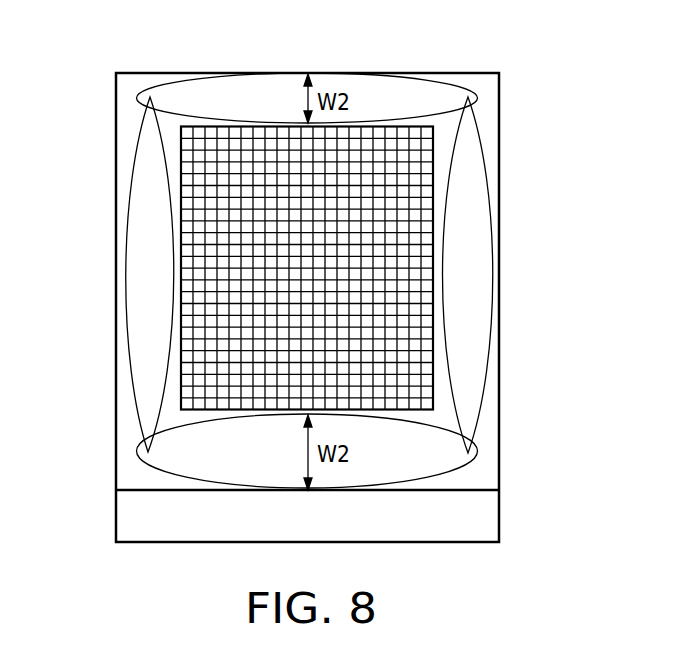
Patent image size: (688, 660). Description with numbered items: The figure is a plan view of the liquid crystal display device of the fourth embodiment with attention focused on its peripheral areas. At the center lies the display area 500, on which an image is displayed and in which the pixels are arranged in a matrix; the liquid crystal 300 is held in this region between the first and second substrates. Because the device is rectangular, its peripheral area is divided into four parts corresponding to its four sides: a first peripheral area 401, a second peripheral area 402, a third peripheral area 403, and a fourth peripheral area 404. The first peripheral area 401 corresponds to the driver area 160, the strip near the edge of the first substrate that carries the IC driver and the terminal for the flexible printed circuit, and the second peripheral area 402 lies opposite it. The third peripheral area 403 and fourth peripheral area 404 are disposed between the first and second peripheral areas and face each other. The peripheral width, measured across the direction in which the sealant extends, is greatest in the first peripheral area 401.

The driver area 160 is at (490, 520).
The liquid crystal 300 is at (225, 153).
The display area 500 is at (297, 218).
The first peripheral area 401 is at (193, 477).
The second peripheral area 402 is at (428, 73).
The third peripheral area 403 is at (128, 172).
The fourth peripheral area 404 is at (486, 148).